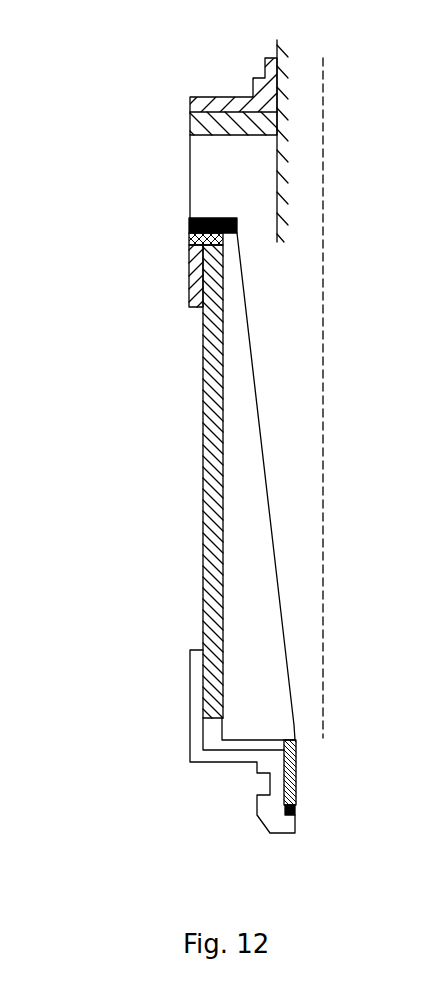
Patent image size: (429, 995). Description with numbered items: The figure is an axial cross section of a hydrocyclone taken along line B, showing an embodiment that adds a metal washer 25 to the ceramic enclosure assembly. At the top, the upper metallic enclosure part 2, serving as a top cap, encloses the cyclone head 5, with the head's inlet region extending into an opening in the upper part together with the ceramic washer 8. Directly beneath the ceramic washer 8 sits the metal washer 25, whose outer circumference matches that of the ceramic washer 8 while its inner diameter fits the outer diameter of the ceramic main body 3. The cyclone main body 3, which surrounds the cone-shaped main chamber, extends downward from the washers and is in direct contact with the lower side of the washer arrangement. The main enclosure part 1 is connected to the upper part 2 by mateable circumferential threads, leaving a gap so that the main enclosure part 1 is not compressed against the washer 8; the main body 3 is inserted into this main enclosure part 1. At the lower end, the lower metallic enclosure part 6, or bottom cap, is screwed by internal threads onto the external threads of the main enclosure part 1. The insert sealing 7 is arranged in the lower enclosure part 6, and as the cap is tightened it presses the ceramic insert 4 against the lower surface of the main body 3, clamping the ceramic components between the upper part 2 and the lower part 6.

The main enclosure part 1 is at (207, 400).
The upper metallic enclosure part 2 is at (228, 103).
The cyclone main body 3 is at (240, 467).
The ceramic insert 4 is at (297, 778).
The cyclone head 5 is at (277, 158).
The lower metallic enclosure part 6 is at (267, 812).
The insert sealing 7 is at (297, 812).
The ceramic washer 8 is at (189, 222).
The metal washer 25 is at (189, 238).